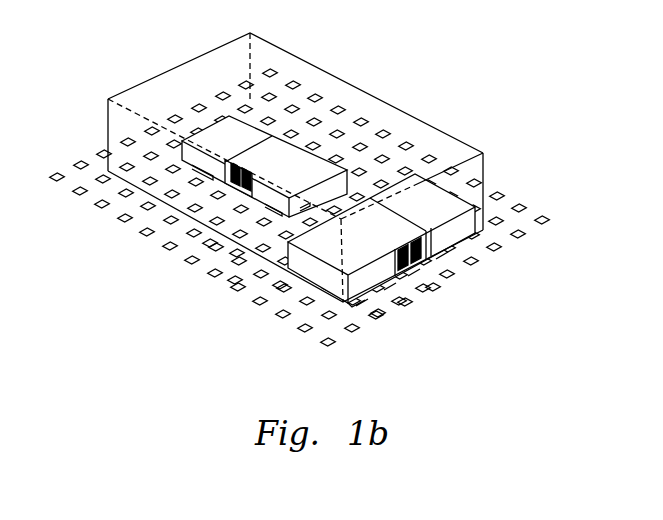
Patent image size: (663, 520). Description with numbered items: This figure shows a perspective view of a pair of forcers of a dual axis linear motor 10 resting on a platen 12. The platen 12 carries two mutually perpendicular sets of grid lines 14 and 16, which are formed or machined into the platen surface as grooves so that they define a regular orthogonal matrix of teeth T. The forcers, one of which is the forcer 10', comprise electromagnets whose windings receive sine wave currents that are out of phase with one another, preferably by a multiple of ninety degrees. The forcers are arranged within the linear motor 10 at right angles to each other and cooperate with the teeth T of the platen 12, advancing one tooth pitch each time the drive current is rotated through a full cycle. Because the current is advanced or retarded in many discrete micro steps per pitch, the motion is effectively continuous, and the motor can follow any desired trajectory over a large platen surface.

The linear motor 10 is at (262, 120).
The forcer 10' is at (405, 240).
The platen 12 is at (453, 281).
The grid lines 14 is at (379, 313).
The grid lines 16 is at (485, 185).
The teeth T is at (280, 285).